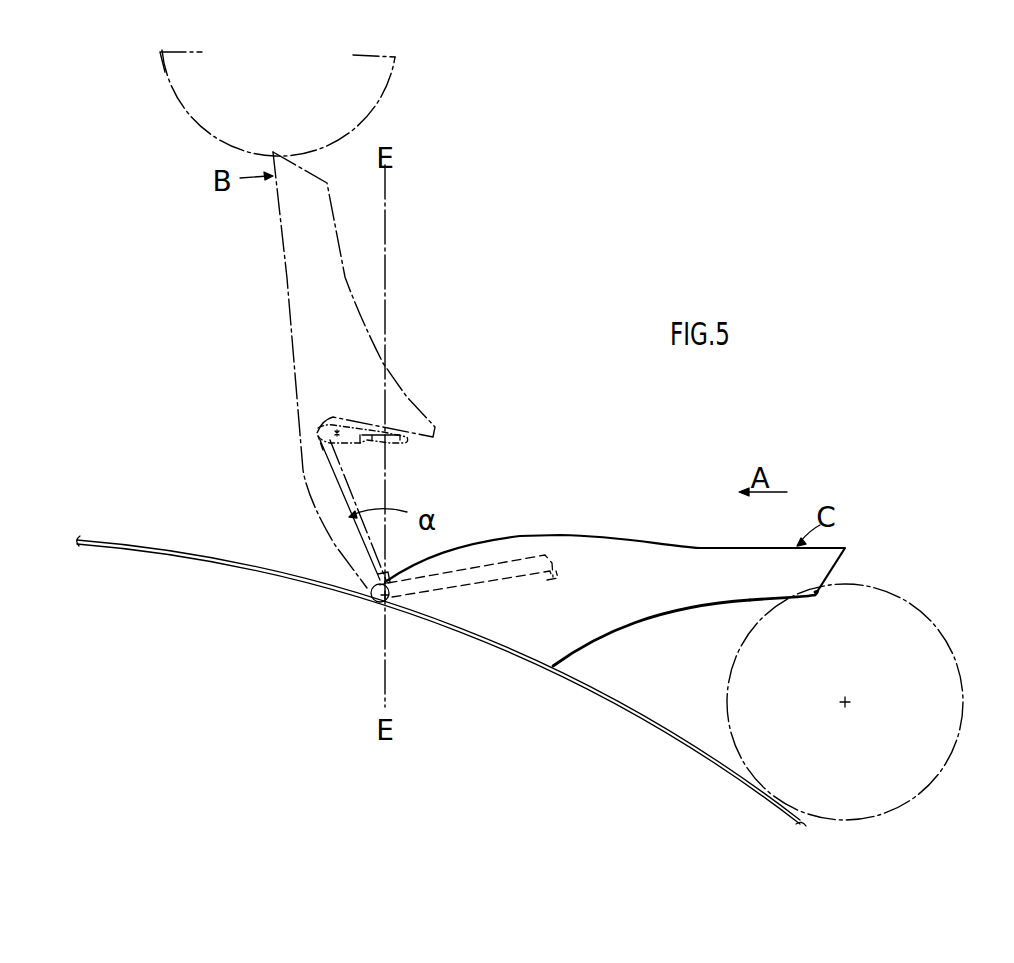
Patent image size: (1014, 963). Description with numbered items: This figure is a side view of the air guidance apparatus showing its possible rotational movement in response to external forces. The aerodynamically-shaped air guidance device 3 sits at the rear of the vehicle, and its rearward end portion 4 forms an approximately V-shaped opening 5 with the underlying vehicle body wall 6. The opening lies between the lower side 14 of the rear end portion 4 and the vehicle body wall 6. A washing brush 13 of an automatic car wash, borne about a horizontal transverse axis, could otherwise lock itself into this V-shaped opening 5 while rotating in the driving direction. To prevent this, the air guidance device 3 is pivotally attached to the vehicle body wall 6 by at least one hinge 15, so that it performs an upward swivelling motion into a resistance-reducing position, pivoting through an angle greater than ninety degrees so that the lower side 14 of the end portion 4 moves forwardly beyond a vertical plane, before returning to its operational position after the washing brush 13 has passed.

The air guidance device 3 is at (570, 537).
The end portion 4 is at (818, 598).
The V-shaped opening 5 is at (651, 634).
The vehicle body wall 6 is at (665, 730).
The washing brush 13 is at (956, 661).
The lower side 14 is at (342, 273).
The hinge 15 is at (372, 606).